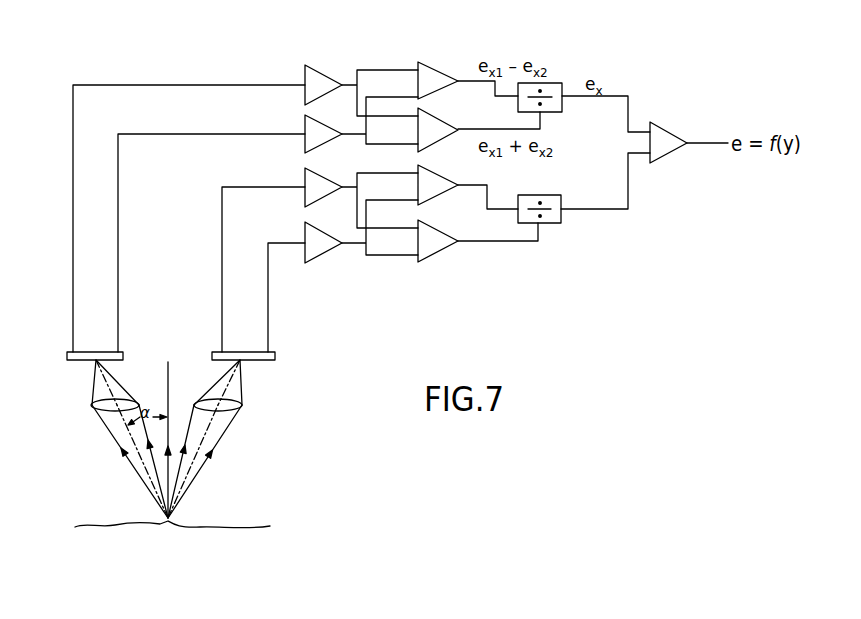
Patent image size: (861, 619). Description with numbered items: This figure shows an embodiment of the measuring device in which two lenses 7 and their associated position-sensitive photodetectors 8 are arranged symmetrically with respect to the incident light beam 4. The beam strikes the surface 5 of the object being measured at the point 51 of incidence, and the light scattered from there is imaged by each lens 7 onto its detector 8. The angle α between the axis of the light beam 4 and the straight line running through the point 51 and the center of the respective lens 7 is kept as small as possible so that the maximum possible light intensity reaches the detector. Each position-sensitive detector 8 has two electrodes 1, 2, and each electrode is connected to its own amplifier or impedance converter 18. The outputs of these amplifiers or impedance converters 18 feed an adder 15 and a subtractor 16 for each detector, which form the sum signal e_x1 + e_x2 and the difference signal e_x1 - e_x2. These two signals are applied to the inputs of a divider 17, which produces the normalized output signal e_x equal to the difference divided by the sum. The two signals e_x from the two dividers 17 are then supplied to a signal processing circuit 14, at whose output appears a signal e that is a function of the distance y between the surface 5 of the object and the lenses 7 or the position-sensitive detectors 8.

The electrode 1 is at (75, 333).
The electrode 2 is at (119, 334).
The incident light beam 4 is at (169, 386).
The surface 5 is at (255, 527).
The lens 7 is at (95, 410).
The position-sensitive photodetector 8 is at (66, 359).
The signal processing circuit 14 is at (670, 148).
The adder 15 is at (443, 134).
The subtractor 16 is at (442, 75).
The divider 17 is at (560, 83).
The amplifier or impedance converter 18 is at (304, 96).
The point of incidence 51 is at (170, 522).